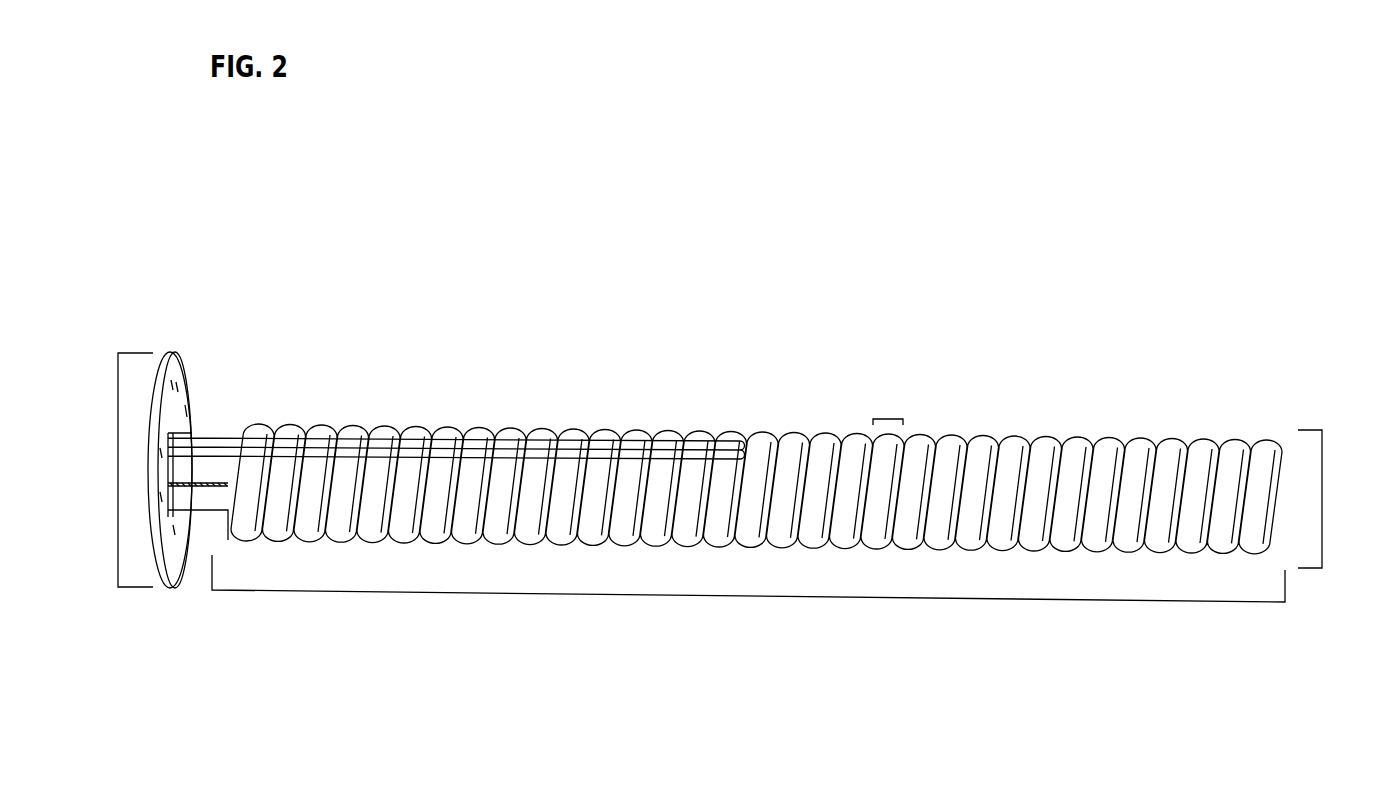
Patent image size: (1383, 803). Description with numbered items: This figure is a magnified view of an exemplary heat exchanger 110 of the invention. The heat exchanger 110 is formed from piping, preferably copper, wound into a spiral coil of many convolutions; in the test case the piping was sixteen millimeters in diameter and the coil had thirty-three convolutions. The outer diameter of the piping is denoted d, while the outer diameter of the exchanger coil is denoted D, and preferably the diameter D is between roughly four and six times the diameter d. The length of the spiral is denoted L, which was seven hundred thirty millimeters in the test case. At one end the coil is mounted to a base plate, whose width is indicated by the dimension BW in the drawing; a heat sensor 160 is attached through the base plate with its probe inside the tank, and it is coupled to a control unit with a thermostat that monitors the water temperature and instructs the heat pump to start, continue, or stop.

The heat exchanger 110 is at (662, 305).
The heat sensor 160 is at (212, 437).
The base width dimension BW is at (103, 470).
The length of the spiral L is at (748, 601).
The diameter of the exchanger coil D is at (1337, 499).
The diameter of the piping d is at (888, 406).